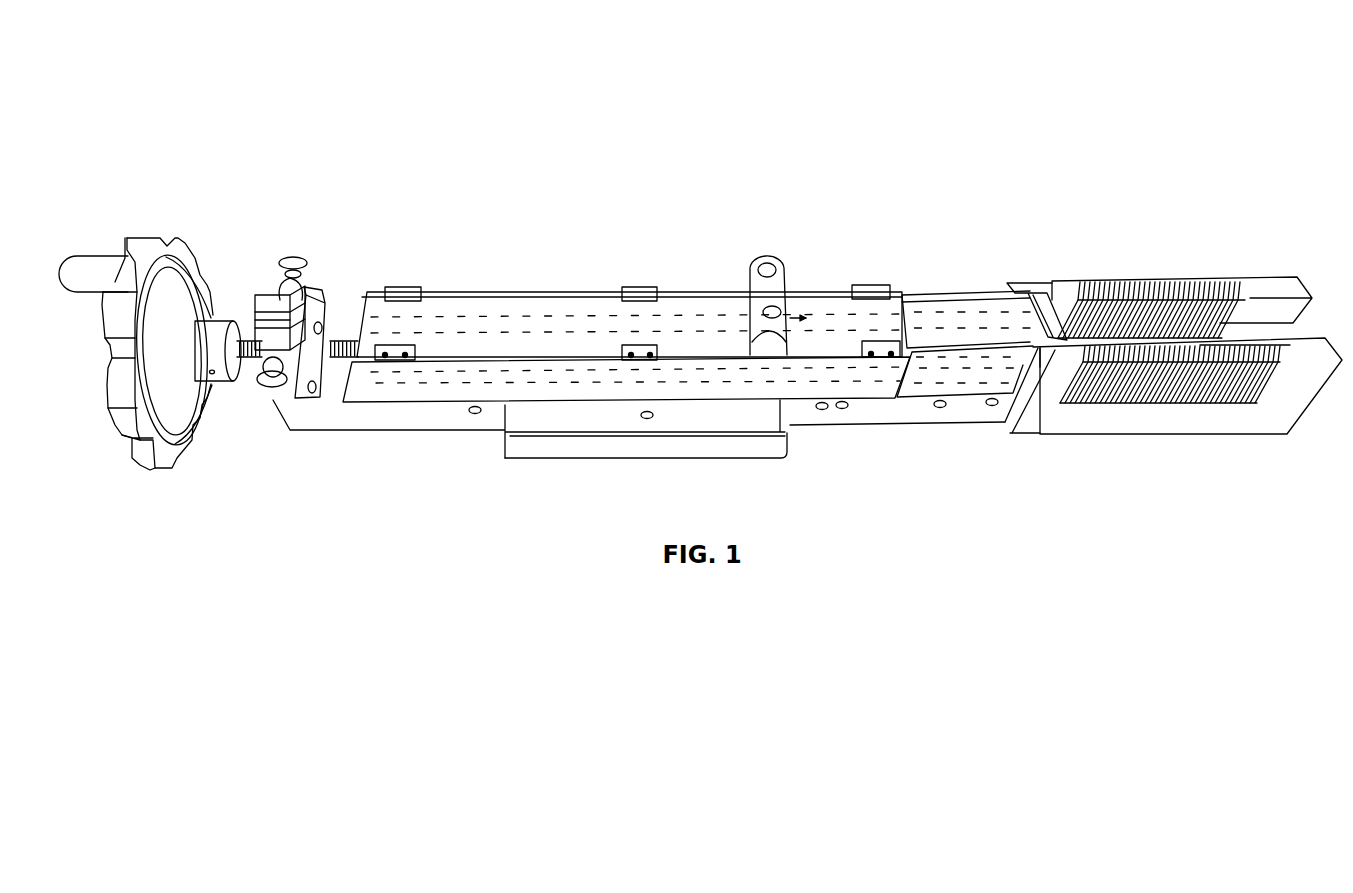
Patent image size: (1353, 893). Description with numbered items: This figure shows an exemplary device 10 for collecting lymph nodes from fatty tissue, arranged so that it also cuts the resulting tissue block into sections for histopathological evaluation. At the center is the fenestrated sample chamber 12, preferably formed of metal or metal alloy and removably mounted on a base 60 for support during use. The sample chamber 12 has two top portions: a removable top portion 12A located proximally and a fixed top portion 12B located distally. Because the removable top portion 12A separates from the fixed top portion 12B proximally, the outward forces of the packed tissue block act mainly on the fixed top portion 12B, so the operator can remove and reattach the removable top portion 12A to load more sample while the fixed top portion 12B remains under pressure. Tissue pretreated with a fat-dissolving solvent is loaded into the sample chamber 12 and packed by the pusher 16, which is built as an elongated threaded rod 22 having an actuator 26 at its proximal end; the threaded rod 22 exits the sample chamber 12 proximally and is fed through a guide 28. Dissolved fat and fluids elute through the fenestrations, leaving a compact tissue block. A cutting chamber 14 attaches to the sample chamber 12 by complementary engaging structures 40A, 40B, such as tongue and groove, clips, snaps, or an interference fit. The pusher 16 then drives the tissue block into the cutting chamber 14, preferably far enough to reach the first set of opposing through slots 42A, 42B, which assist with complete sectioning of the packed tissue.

The device 10 is at (152, 80).
The sample chamber 12 is at (519, 253).
The removable top portion 12A is at (458, 300).
The fixed top portion 12B is at (950, 302).
The cutting chamber 14 is at (1177, 258).
The pusher 16 is at (232, 265).
The threaded rod 22 is at (342, 337).
The actuator 26 is at (152, 236).
The guide 28 is at (251, 432).
The complementary engaging structure 40A is at (1038, 300).
The complementary engaging structure 40B is at (1005, 422).
The through slot 42A is at (1118, 280).
The through slot 42B is at (1133, 407).
The base 60 is at (398, 422).